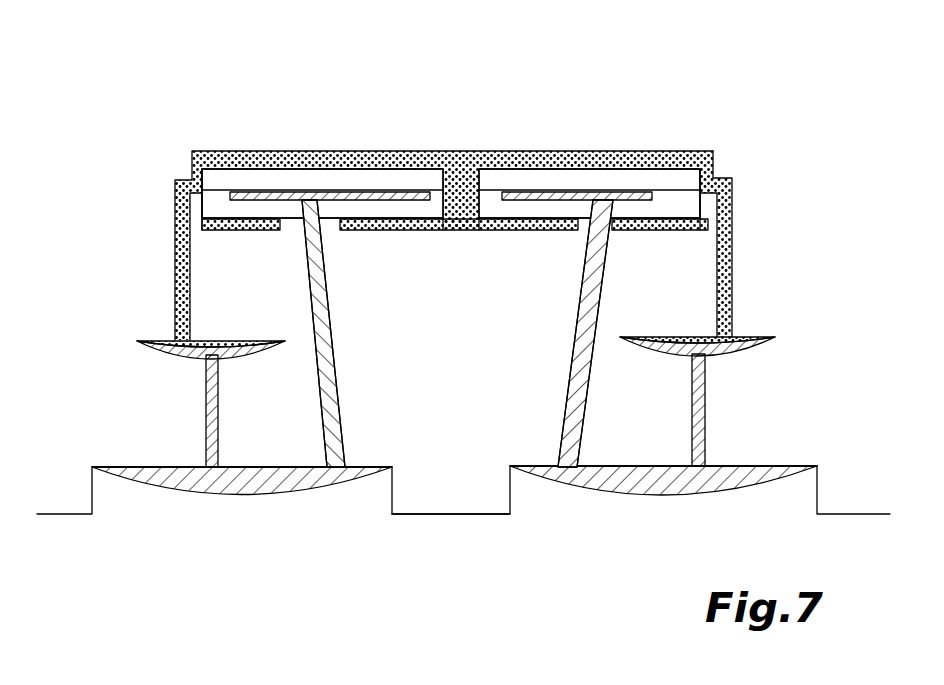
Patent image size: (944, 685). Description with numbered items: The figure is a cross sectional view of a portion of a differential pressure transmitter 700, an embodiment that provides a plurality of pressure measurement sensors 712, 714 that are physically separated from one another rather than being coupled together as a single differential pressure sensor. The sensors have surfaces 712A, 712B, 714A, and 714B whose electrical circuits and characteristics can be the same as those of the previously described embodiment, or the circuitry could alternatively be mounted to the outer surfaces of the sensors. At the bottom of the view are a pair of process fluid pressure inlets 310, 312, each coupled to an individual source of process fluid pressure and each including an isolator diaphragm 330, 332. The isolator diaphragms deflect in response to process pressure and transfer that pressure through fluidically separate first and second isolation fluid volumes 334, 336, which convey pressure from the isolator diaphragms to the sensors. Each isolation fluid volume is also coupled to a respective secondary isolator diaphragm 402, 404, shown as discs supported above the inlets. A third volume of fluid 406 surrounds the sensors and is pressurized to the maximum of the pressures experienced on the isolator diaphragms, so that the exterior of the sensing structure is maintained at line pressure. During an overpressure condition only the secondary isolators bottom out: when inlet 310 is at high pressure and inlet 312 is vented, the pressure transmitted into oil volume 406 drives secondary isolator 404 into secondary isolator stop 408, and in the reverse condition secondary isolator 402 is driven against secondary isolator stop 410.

The differential pressure transmitter 700 is at (508, 75).
The third volume of fluid 406 is at (543, 160).
The pressure measurement sensor 712 is at (310, 168).
The surface 712A is at (275, 193).
The surface 712B is at (240, 192).
The pressure measurement sensor 714 is at (672, 160).
The surface 714A is at (632, 198).
The surface 714B is at (640, 196).
The secondary isolator diaphragm 402 is at (162, 350).
The secondary isolator diaphragm 404 is at (747, 350).
The secondary isolator stop 410 is at (182, 362).
The secondary isolator stop 408 is at (718, 358).
The first isolation fluid volume 334 is at (163, 472).
The second isolation fluid volume 336 is at (763, 477).
The isolator diaphragm 330 is at (173, 490).
The isolator diaphragm 332 is at (718, 494).
The process fluid pressure inlet 310 is at (240, 533).
The process fluid pressure inlet 312 is at (675, 535).